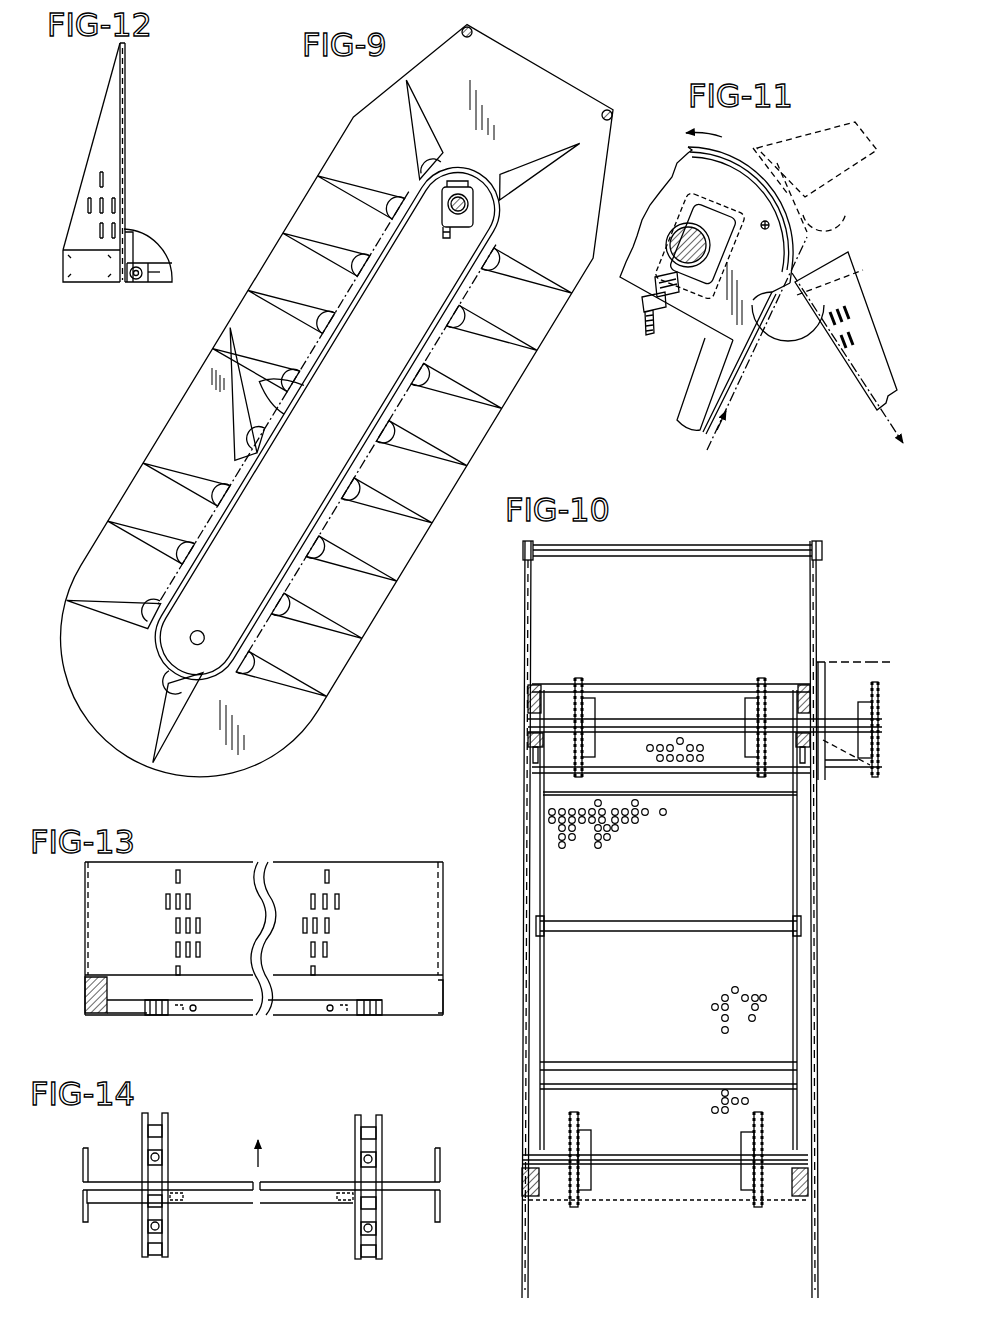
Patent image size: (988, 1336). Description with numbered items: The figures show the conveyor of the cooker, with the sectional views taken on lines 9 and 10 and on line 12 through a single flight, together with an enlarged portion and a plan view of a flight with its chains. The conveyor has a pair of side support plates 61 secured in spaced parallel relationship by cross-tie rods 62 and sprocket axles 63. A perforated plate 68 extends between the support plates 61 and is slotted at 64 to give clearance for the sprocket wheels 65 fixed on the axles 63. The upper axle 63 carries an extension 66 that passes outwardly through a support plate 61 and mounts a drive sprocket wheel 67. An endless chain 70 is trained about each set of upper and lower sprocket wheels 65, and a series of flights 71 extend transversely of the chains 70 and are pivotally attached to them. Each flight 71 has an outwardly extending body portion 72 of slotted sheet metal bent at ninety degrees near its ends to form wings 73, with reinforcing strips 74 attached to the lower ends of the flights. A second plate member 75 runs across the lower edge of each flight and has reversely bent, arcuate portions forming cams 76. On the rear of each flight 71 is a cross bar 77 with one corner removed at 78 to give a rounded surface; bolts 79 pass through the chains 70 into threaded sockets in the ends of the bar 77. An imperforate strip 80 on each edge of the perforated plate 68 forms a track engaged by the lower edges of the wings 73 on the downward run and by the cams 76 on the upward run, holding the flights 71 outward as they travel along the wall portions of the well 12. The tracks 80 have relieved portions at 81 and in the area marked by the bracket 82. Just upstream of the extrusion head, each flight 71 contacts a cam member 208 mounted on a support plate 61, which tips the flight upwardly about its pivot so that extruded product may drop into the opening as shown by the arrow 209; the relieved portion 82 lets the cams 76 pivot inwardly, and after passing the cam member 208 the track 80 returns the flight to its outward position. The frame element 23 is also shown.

In FIG. 10, the section line 9- 9 is at (770, 517).
In FIG. 9, the section line 10- 10 is at (527, 88).
In FIG. 13, the well 12 is at (200, 833).
In FIG. 14, the conveyor frame 23 is at (83, 1165).
In FIG. 9, the side support plate 61 is at (130, 497).
In FIG. 10, the side support plate 61 is at (530, 600).
In FIG. 9, the cross-tie rod 62 is at (462, 28).
In FIG. 10, the cross-tie rod 62 is at (693, 548).
In FIG. 9, the sprocket axle 63 is at (470, 208).
In FIG. 11, the sprocket axle 63 is at (680, 238).
In FIG. 10, the sprocket axle 63 is at (625, 726).
In FIG. 10, the slot 64 is at (580, 680).
In FIG. 10, the sprocket wheel 65 is at (570, 773).
In FIG. 10, the extension 66 is at (833, 723).
In FIG. 10, the drive sprocket wheel 67 is at (873, 777).
In FIG. 10, the perforated plate 68 is at (690, 684).
In FIG. 13, the endless chain 70 is at (147, 1005).
In FIG. 14, the endless chain 70 is at (168, 1130).
In FIG. 12, the flight 71 is at (134, 80).
In FIG. 9, the flight 71 is at (400, 129).
In FIG. 11, the flight 71 is at (857, 392).
In FIG. 13, the flight 71 is at (273, 855).
In FIG. 12, the body portion 72 is at (123, 115).
In FIG. 13, the body portion 72 is at (397, 875).
In FIG. 14, the body portion 72 is at (307, 1182).
In FIG. 12, the wing 73 is at (100, 137).
In FIG. 14, the wing 73 is at (442, 1167).
In FIG. 12, the reinforcing strip 74 is at (87, 277).
In FIG. 14, the reinforcing strip 74 is at (88, 1160).
In FIG. 12, the second plate member 75 is at (127, 230).
In FIG. 13, the second plate member 75 is at (120, 1008).
In FIG. 14, the second plate member 75 is at (112, 1192).
In FIG. 12, the cam 76 is at (150, 247).
In FIG. 11, the cam 76 is at (795, 330).
In FIG. 13, the cam 76 is at (85, 1000).
In FIG. 14, the cam 76 is at (82, 1213).
In FIG. 12, the cross bar 77 is at (150, 263).
In FIG. 13, the cross bar 77 is at (287, 1010).
In FIG. 14, the cross bar 77 is at (273, 1203).
In FIG. 12, the removed corner 78 is at (153, 283).
In FIG. 11, the removed corner 78 is at (866, 272).
In FIG. 12, the bolt 79 is at (128, 283).
In FIG. 13, the bolt 79 is at (183, 1013).
In FIG. 14, the bolt 79 is at (177, 1203).
In FIG. 9, the track 80 is at (360, 310).
In FIG. 11, the track 80 is at (790, 343).
In FIG. 10, the track 80 is at (530, 665).
In FIG. 11, the relieved portion 81 is at (770, 287).
In FIG. 9, the relieved portion 82 is at (330, 373).
In FIG. 9, the cam member 208 is at (218, 354).
In FIG. 9, the arrow 209 is at (183, 330).